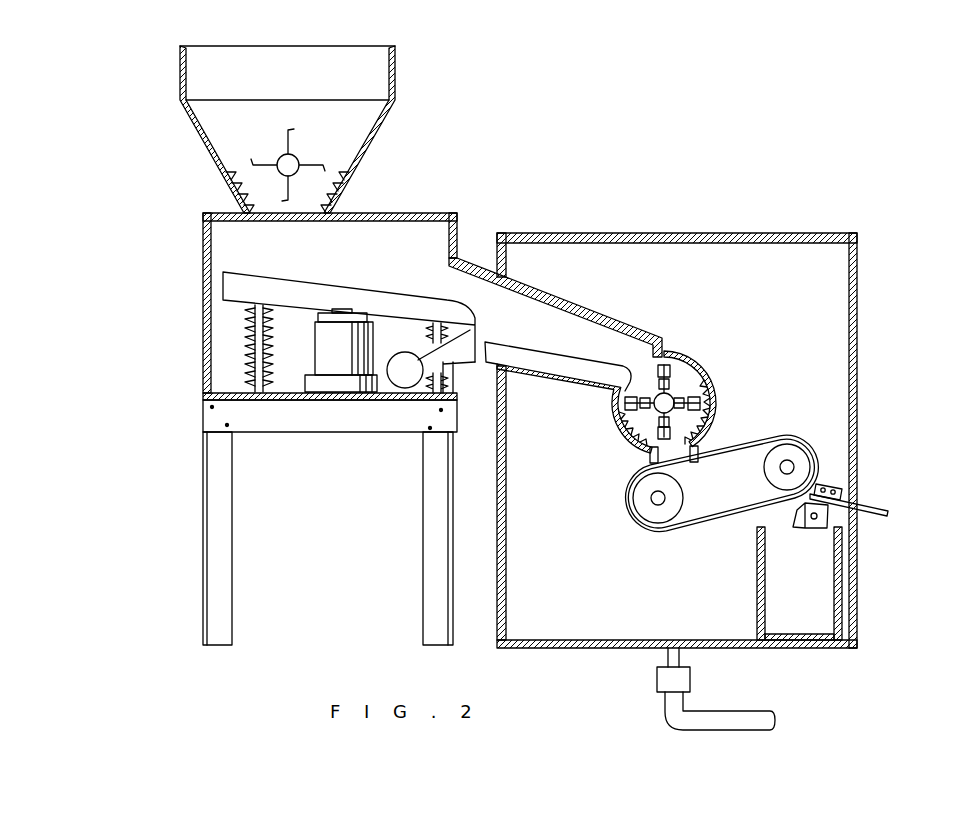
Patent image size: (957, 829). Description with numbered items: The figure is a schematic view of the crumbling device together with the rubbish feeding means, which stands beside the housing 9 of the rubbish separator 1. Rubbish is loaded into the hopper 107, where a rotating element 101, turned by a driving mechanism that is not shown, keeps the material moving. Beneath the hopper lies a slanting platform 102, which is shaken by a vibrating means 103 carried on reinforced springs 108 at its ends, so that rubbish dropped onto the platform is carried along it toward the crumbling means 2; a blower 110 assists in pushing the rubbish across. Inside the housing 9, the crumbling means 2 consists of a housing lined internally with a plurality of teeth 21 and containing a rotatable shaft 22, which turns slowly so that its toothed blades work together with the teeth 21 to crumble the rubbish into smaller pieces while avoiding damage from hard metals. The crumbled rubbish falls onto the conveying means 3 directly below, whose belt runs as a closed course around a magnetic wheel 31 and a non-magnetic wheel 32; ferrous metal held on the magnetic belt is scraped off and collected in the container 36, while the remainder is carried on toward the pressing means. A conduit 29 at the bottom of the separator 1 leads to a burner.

The rubbish separator 1 is at (606, 216).
The crumbling means 2 is at (703, 380).
The conveying means 3 is at (755, 437).
The housing 9 is at (860, 348).
The teeth 21 is at (712, 405).
The rotatable shaft 22 is at (628, 402).
The conduit 29 is at (730, 715).
The magnetic wheel 31 is at (658, 505).
The non-magnetic wheel 32 is at (787, 474).
The container 36 is at (818, 574).
The rotating element 101 is at (273, 162).
The slanting platform 102 is at (270, 285).
The vibrating means 103 is at (340, 380).
The hopper 107 is at (180, 86).
The reinforced springs 108 is at (266, 370).
The blower 110 is at (405, 382).